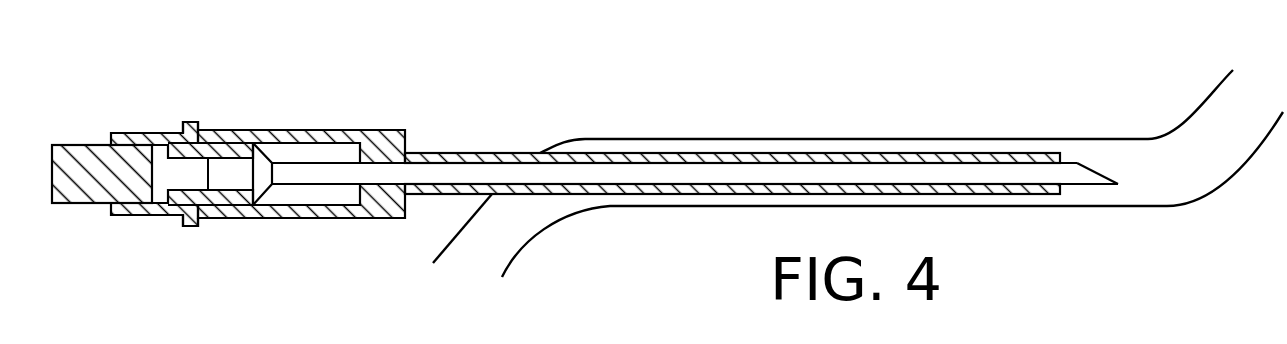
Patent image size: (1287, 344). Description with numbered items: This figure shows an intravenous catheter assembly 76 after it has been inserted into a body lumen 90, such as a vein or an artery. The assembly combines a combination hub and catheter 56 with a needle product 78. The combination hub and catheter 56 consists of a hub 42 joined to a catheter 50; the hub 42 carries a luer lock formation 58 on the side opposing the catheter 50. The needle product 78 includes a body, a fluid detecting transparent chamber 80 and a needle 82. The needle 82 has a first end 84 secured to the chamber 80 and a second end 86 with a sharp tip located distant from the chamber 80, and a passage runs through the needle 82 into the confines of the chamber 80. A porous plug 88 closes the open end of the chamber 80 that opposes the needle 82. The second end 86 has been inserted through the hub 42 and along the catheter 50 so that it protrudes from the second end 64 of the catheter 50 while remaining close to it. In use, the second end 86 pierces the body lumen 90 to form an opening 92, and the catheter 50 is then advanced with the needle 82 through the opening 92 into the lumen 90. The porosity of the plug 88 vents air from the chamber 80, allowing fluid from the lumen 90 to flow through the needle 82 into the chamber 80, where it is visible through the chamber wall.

The hub 42 is at (296, 130).
The catheter 50 is at (831, 158).
The combination hub and catheter 56 is at (349, 85).
The luer lock formation 58 is at (187, 122).
The second end of the catheter 64 is at (1032, 197).
The intravenous catheter assembly 76 is at (271, 58).
The needle product 78 is at (142, 114).
The fluid detecting transparent chamber 80 is at (162, 212).
The needle 82 is at (461, 160).
The first end of the needle 84 is at (312, 176).
The second end of the needle 86 is at (1093, 178).
The porous plug 88 is at (60, 145).
The body lumen 90 is at (677, 139).
The opening 92 is at (535, 152).